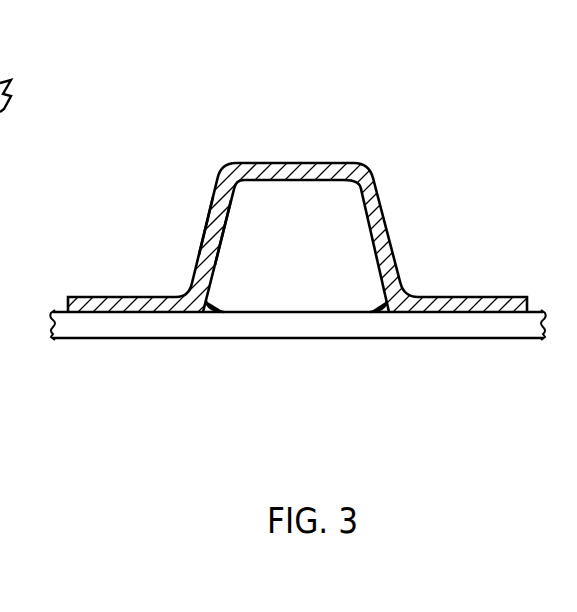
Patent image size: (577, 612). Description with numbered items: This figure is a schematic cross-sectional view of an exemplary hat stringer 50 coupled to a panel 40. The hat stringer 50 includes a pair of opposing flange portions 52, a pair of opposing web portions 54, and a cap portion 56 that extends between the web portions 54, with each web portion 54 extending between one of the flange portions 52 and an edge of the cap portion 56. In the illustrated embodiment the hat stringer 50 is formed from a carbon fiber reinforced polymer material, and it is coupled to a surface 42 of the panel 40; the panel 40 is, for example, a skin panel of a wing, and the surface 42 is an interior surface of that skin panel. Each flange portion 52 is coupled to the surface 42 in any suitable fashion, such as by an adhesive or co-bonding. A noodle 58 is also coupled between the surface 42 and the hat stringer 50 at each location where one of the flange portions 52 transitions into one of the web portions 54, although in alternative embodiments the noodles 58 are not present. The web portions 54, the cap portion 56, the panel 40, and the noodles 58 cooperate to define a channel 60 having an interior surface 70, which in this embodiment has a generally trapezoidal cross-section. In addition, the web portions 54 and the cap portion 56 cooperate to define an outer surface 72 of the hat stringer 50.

The panel 40 is at (77, 327).
The surface 42 is at (58, 311).
The hat stringer 50 is at (158, 108).
The flange portion 52 is at (78, 297).
The web portion 54 is at (208, 228).
The cap portion 56 is at (297, 163).
The noodle 58 is at (216, 310).
The channel 60 is at (326, 255).
The interior surface 70 is at (229, 212).
The outer surface 72 is at (218, 183).